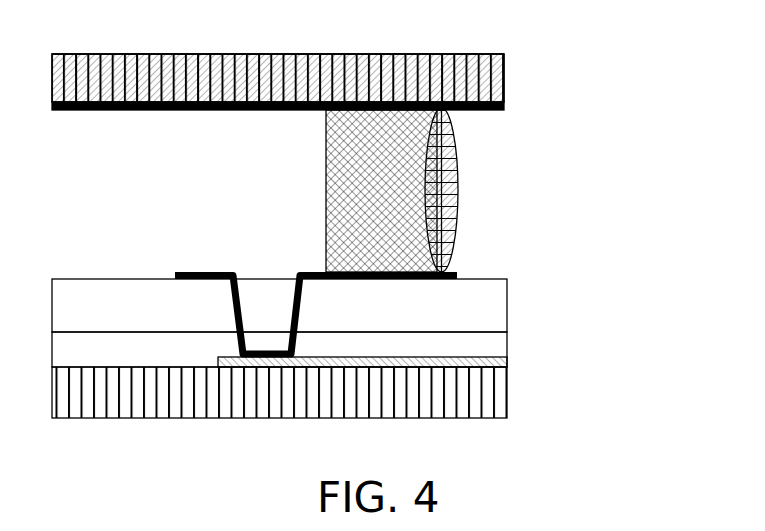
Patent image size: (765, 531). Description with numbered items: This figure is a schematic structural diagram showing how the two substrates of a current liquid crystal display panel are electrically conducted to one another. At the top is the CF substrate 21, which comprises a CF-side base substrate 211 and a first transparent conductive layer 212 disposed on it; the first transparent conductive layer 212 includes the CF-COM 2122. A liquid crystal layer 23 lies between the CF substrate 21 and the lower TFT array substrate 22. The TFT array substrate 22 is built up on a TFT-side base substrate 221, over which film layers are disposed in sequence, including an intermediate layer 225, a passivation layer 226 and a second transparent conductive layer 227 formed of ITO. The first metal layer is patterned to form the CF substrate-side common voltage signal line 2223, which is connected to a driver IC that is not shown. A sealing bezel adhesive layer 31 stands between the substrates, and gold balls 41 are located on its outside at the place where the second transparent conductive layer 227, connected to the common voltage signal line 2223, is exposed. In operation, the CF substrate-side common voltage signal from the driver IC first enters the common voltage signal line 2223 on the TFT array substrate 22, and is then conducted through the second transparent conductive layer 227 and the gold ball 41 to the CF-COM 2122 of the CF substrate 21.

The CF substrate 21 is at (356, 110).
The CF-side base substrate 211 is at (506, 73).
The first transparent conductive layer 212 is at (506, 107).
The CF-COM 2122 is at (187, 110).
The liquid crystal layer 23 is at (88, 173).
The sealing bezel adhesive layer 31 is at (337, 203).
The gold ball 41 is at (458, 189).
The TFT array substrate 22 is at (356, 364).
The second transparent conductive layer 227 is at (457, 279).
The passivation layer 226 is at (507, 307).
The insulating layer 225 is at (507, 353).
The CF substrate-side common voltage signal line 2223 is at (265, 365).
The TFT-side base substrate 221 is at (309, 392).